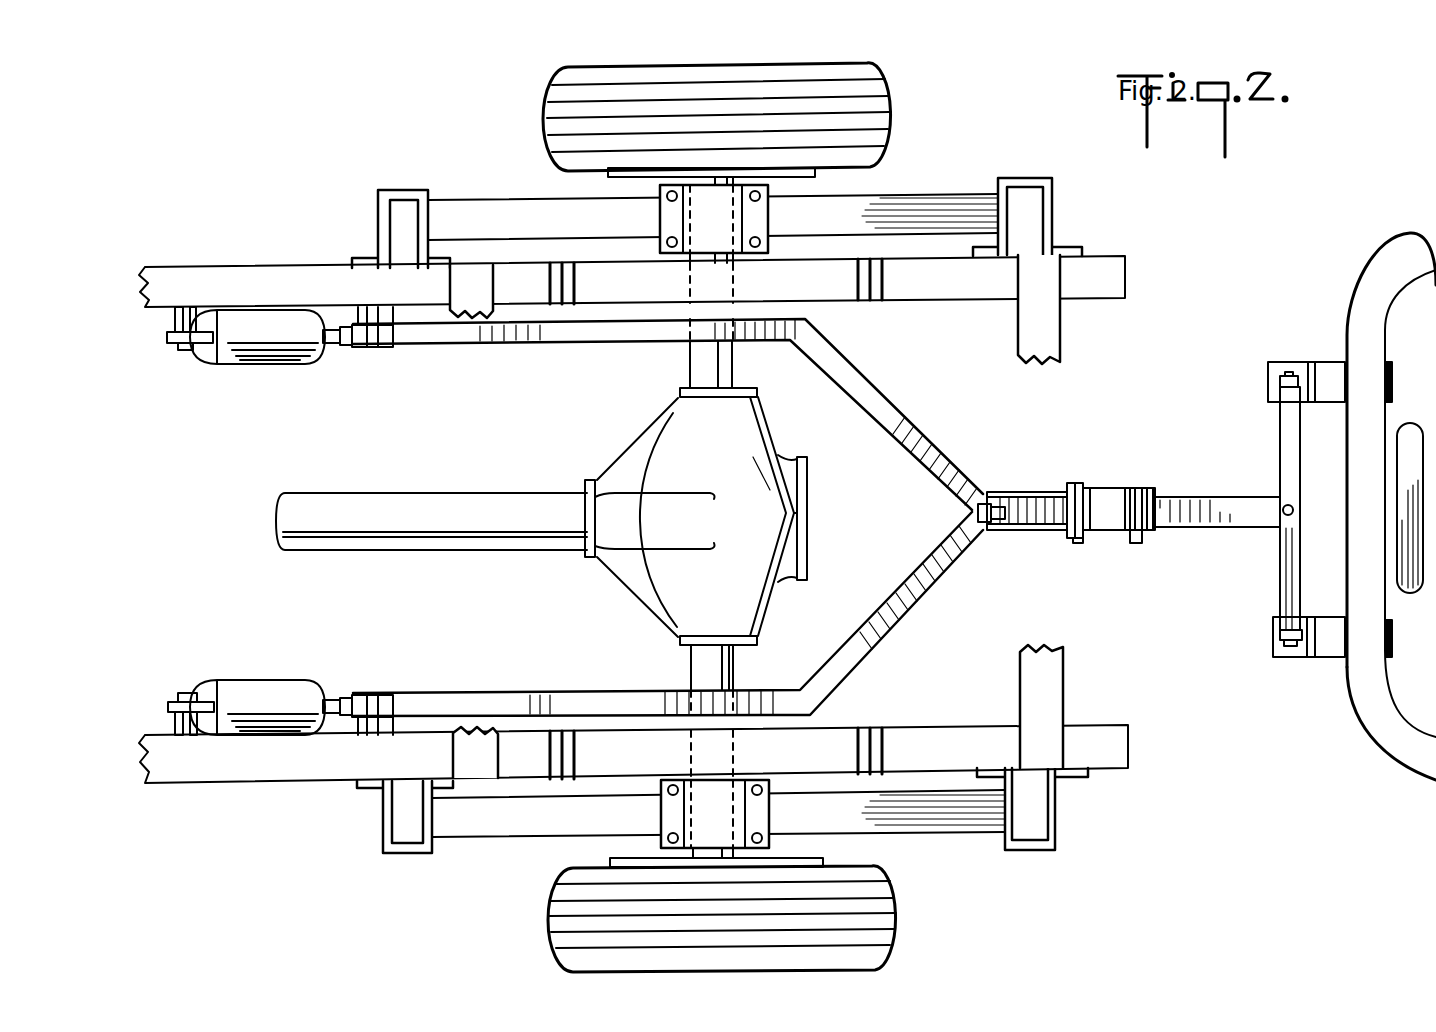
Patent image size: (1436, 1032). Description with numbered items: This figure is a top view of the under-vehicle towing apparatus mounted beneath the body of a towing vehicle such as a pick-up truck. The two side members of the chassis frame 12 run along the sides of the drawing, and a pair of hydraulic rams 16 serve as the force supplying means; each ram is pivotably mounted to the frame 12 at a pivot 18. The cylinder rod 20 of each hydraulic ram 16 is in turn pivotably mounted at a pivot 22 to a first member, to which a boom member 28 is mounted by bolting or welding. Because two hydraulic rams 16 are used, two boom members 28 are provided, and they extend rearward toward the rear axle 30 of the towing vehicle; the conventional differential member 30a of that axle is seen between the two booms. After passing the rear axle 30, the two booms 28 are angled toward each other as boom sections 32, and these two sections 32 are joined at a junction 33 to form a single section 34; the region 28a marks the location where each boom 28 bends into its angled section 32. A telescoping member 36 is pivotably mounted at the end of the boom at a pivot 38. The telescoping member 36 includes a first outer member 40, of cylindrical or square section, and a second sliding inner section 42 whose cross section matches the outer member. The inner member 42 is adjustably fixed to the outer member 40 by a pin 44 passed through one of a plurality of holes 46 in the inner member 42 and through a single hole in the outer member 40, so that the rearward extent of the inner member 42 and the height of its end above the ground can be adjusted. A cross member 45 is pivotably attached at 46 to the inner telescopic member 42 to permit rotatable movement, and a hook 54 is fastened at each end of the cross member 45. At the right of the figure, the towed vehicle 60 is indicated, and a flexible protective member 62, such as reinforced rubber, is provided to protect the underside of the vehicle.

The frame 12 is at (270, 280).
The hydraulic rams 16 is at (276, 360).
The pivot mounting of hydraulic rams 18 is at (183, 352).
The cylinder rod 20 is at (338, 345).
The pivot mounting of cylinder rod 22 is at (375, 347).
The boom member 28 is at (668, 514).
The angled portion of tie rod 28a is at (815, 320).
The rear axle 30 is at (735, 370).
The differential member 30a is at (747, 447).
The boom sections 32 is at (912, 435).
The joint of boom sections 33 is at (984, 500).
The section 34 is at (1038, 500).
The telescoping member 36 is at (1094, 520).
The pivot mounting of telescoping member 38 is at (1070, 540).
The first outer member 40 is at (1095, 540).
The second sliding inner section 42 is at (1208, 510).
The pin 44 is at (1134, 543).
The cross member 45 is at (1258, 509).
The holes 46 is at (1283, 514).
The hook 54 is at (1282, 380).
The towed vehicle 60 is at (1388, 745).
The flexible protective member 62 is at (1325, 370).